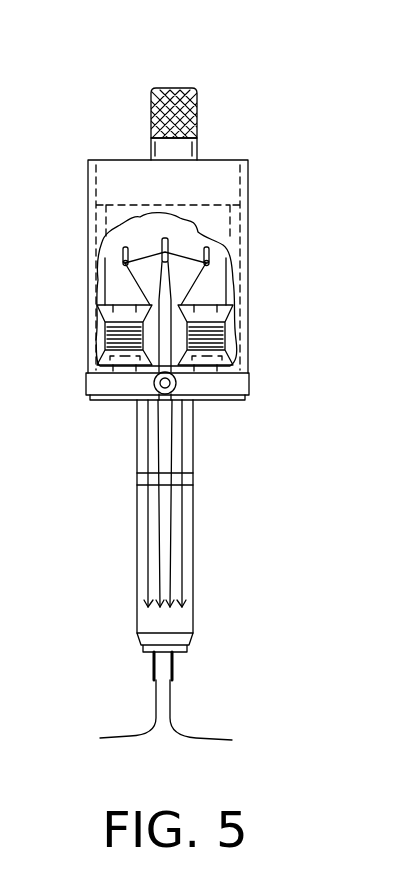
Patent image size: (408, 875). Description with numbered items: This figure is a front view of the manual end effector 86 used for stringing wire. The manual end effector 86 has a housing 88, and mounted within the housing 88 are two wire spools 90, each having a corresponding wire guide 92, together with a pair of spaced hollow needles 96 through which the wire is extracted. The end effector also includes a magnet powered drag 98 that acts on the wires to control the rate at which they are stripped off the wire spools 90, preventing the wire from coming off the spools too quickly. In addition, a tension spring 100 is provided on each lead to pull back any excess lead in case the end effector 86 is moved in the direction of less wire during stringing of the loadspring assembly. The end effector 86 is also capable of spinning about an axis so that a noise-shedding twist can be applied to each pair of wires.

The manual end effector 86 is at (276, 104).
The housing 88 is at (249, 197).
The wire spool 90 is at (220, 311).
The wire guide 92 is at (209, 250).
The hollow needle 96 is at (175, 659).
The magnet powered drag 98 is at (176, 393).
The tension spring 100 is at (165, 243).